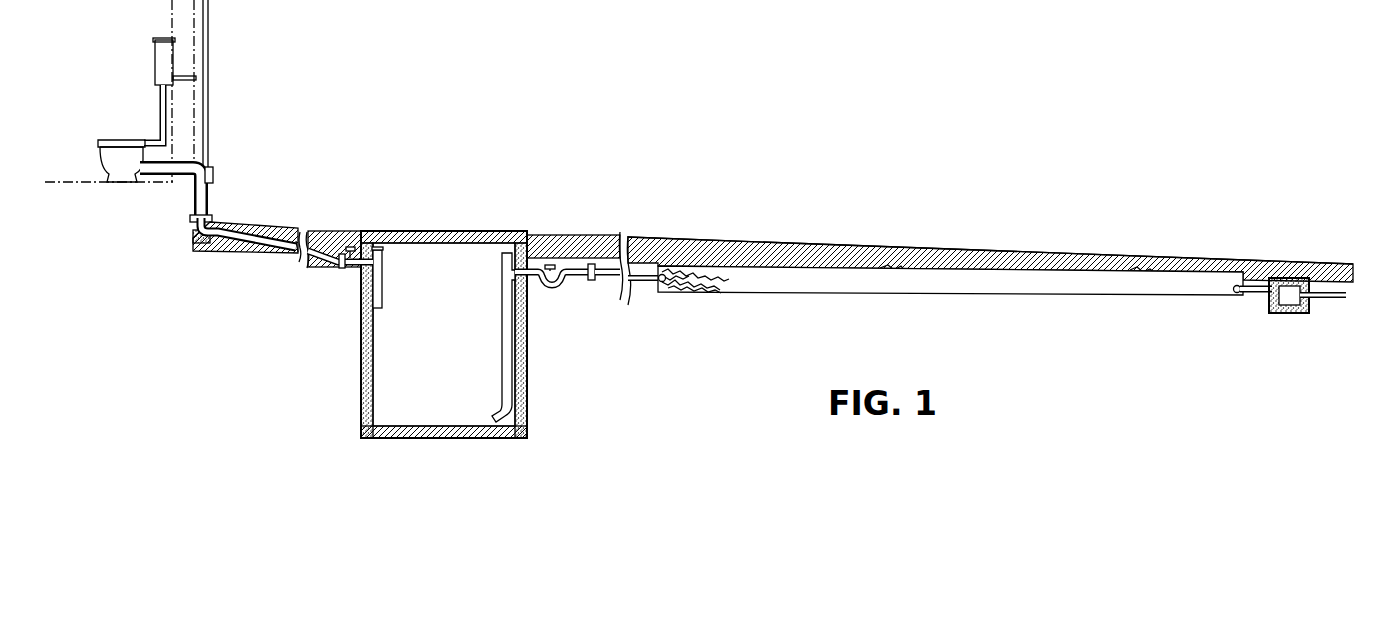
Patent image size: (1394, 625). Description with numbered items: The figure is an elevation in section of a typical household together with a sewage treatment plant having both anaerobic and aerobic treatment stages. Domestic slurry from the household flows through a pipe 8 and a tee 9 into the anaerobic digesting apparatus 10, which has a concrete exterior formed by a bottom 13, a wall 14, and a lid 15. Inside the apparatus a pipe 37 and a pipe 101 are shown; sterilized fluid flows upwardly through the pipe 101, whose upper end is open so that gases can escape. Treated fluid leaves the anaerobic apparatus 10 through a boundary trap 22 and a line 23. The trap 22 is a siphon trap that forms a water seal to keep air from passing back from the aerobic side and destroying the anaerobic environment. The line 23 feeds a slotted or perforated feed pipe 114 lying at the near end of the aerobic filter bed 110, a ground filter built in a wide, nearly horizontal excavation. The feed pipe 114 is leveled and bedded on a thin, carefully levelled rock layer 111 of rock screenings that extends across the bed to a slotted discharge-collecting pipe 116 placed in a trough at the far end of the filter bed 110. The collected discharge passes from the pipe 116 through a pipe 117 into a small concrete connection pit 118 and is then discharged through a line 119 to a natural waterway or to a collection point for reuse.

The pipe 8 is at (263, 240).
The tee 9 is at (351, 264).
The anaerobic digesting apparatus 10 is at (458, 308).
The bottom 13 is at (443, 427).
The wall 14 is at (361, 352).
The lid 15 is at (443, 231).
The boundary trap 22 is at (557, 286).
The line 23 is at (606, 268).
The pipe 37 is at (380, 286).
The pipe 101 is at (503, 330).
The aerobic filter bed 110 is at (925, 263).
The rock layer 111 is at (706, 272).
The feed pipe 114 is at (664, 274).
The discharge-collecting pipe 116 is at (1236, 285).
The pipe 117 is at (1256, 287).
The concrete connection pit 118 is at (1301, 281).
The line 119 is at (1341, 300).